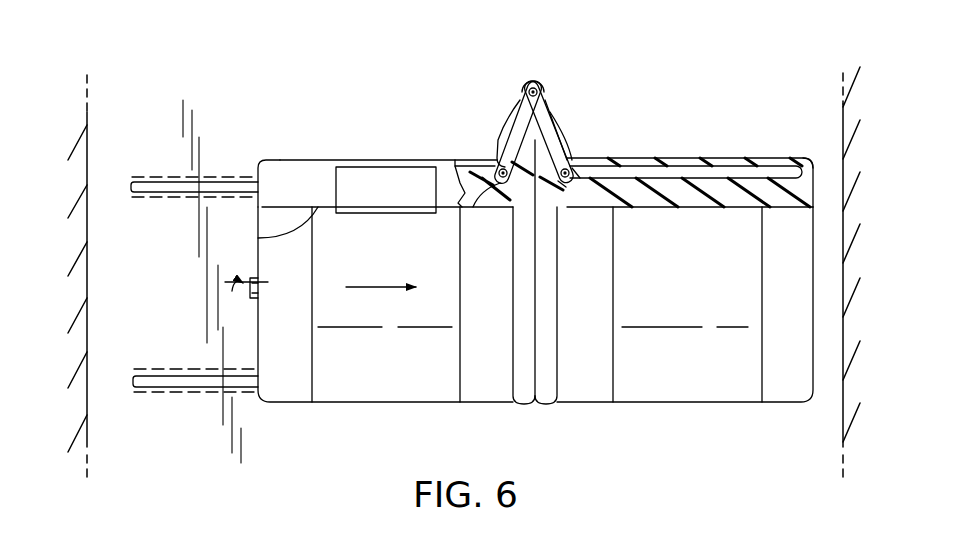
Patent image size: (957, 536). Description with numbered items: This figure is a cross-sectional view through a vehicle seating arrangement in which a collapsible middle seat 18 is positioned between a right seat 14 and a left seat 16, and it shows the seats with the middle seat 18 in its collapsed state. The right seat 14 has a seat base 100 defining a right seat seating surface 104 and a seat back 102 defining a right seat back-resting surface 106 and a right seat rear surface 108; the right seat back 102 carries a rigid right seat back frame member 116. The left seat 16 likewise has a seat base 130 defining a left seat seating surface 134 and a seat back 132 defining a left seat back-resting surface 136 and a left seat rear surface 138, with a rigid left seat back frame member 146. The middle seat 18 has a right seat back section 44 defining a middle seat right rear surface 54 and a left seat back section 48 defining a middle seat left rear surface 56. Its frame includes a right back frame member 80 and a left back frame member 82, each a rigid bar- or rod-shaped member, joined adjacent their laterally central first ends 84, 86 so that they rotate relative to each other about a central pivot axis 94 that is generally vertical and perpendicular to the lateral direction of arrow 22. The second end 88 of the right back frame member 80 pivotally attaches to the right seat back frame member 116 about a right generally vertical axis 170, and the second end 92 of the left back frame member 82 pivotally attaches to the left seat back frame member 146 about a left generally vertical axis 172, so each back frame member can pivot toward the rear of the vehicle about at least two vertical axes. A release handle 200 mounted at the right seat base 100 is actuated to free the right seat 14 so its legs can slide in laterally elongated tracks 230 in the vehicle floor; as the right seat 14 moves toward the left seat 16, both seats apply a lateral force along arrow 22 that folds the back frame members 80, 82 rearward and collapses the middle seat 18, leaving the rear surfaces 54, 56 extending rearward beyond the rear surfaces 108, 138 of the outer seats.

The right seat 14 is at (356, 130).
The left seat 16 is at (712, 128).
The middle seat 18 is at (566, 76).
The arrow 22 is at (380, 278).
The right seat back section 44 is at (503, 114).
The left seat back section 48 is at (558, 102).
The middle seat right rear surface 54 is at (515, 96).
The middle seat left rear surface 56 is at (562, 114).
The right back frame member 80 is at (501, 134).
The left back frame member 82 is at (570, 131).
The first end 84 is at (520, 85).
The first end 86 is at (547, 102).
The second end 88 is at (483, 200).
The second end 92 is at (574, 160).
The pivot axis 94 is at (527, 86).
The seat base 100 is at (333, 405).
The seat back 102 is at (281, 156).
The right seat seating surface 104 is at (367, 365).
The right seat back-resting surface 106 is at (266, 229).
The right seat rear surface 108 is at (320, 160).
The right seat back frame member 116 is at (465, 159).
The seat base 130 is at (695, 405).
The seat back 132 is at (795, 148).
The left seat seating surface 134 is at (660, 365).
The left seat back-resting surface 136 is at (708, 208).
The left seat rear surface 138 is at (748, 157).
The left seat back frame member 146 is at (673, 158).
The right generally vertical axis 170 is at (507, 207).
The left generally vertical axis 172 is at (575, 192).
The release handle 200 is at (250, 293).
The tracks 230 is at (153, 181).